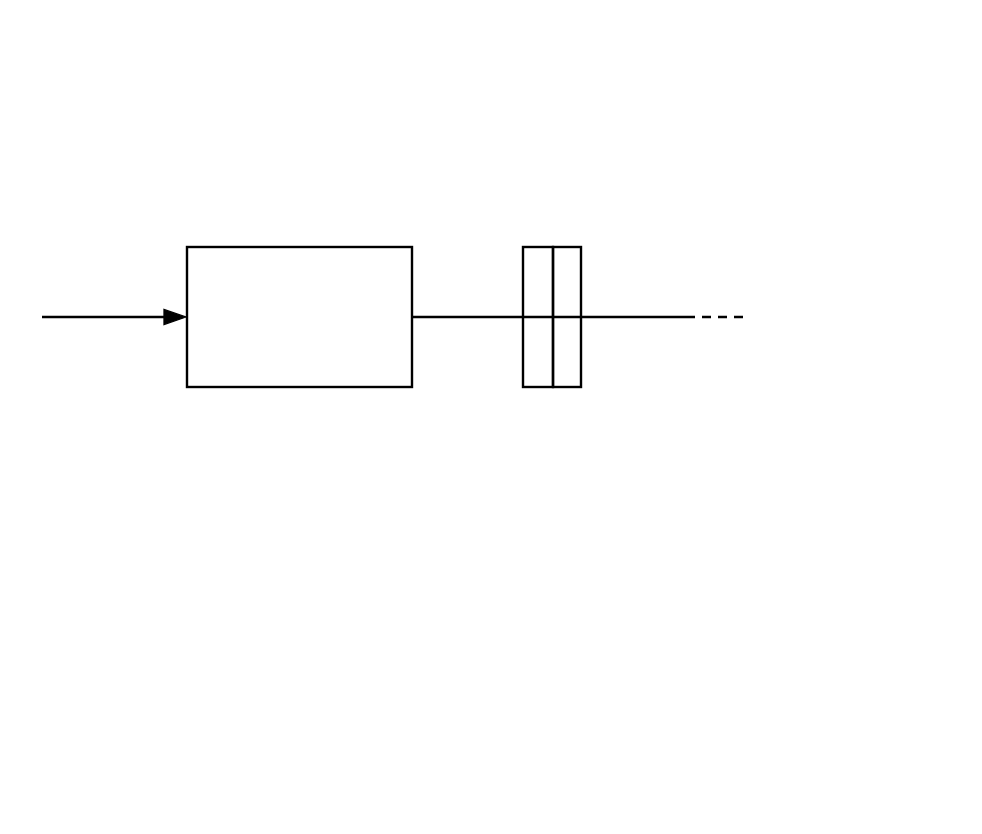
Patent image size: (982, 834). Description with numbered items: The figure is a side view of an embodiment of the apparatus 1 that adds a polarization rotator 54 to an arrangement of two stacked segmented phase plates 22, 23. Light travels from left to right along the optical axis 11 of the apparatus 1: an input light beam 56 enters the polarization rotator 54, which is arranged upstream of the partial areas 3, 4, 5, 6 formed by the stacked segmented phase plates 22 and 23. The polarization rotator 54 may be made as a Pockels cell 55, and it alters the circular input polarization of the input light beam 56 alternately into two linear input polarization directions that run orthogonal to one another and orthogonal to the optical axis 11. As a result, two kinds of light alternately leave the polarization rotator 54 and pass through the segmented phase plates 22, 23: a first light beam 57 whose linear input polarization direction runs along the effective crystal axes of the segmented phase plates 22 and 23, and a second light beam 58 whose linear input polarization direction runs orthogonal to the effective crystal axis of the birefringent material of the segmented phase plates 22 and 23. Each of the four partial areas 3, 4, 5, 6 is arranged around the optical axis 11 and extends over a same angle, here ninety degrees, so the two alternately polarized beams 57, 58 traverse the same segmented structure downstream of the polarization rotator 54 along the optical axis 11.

The apparatus 1 is at (578, 113).
The partial area 3 is at (501, 328).
The partial area 4 is at (501, 328).
The partial area 5 is at (510, 250).
The partial area 6 is at (501, 328).
The optical axis 11 is at (725, 308).
The segmented phase plate 22 is at (527, 406).
The segmented phase plate 23 is at (577, 406).
The polarization rotator 54 is at (299, 244).
The Pockels cell 55 is at (300, 240).
The input light beam 56 is at (93, 310).
The first light beam 57 is at (661, 319).
The second light beam 58 is at (672, 298).